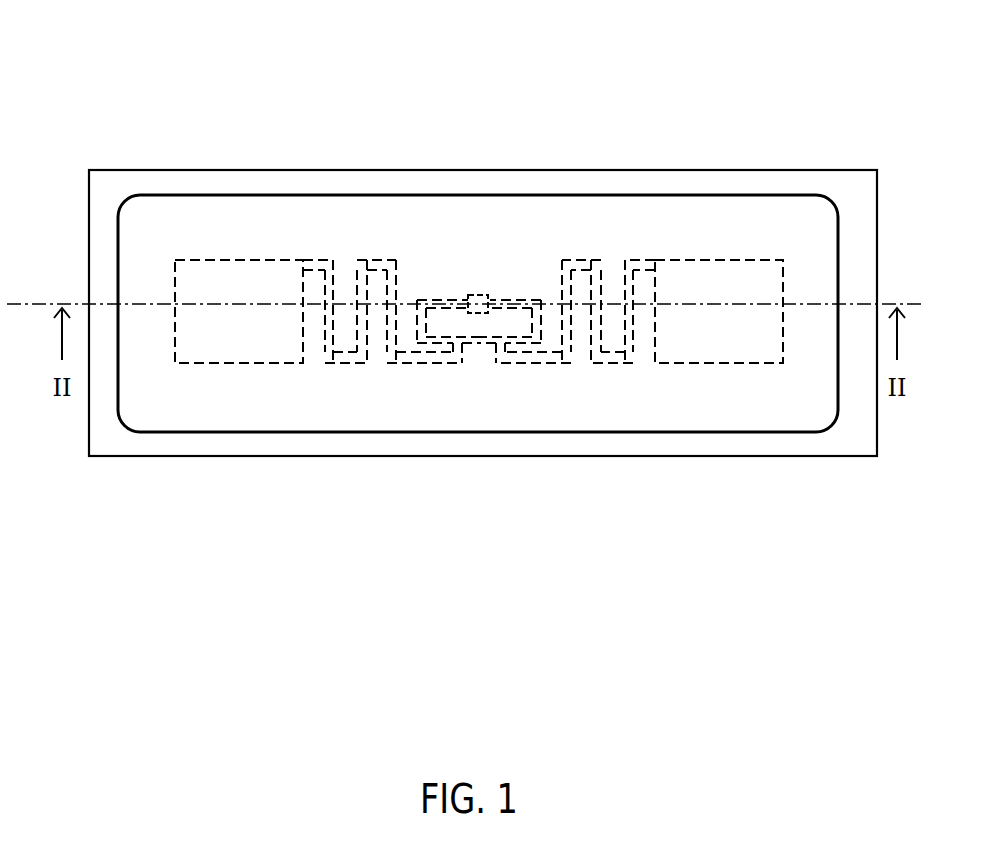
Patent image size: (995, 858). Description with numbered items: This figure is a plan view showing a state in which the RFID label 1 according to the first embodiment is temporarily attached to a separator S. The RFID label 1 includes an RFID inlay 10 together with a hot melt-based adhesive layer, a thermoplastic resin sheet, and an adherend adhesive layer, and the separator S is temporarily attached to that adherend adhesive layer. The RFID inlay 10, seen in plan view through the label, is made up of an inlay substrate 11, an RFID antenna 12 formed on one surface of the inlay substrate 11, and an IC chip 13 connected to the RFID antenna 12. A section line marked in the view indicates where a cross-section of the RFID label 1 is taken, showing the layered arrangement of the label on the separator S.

The RFID label 1 is at (444, 120).
The separator S is at (155, 177).
The RFID inlay 10 is at (653, 124).
The inlay substrate 11 is at (697, 226).
The RFID antenna 12 is at (732, 259).
The IC chip 13 is at (482, 297).